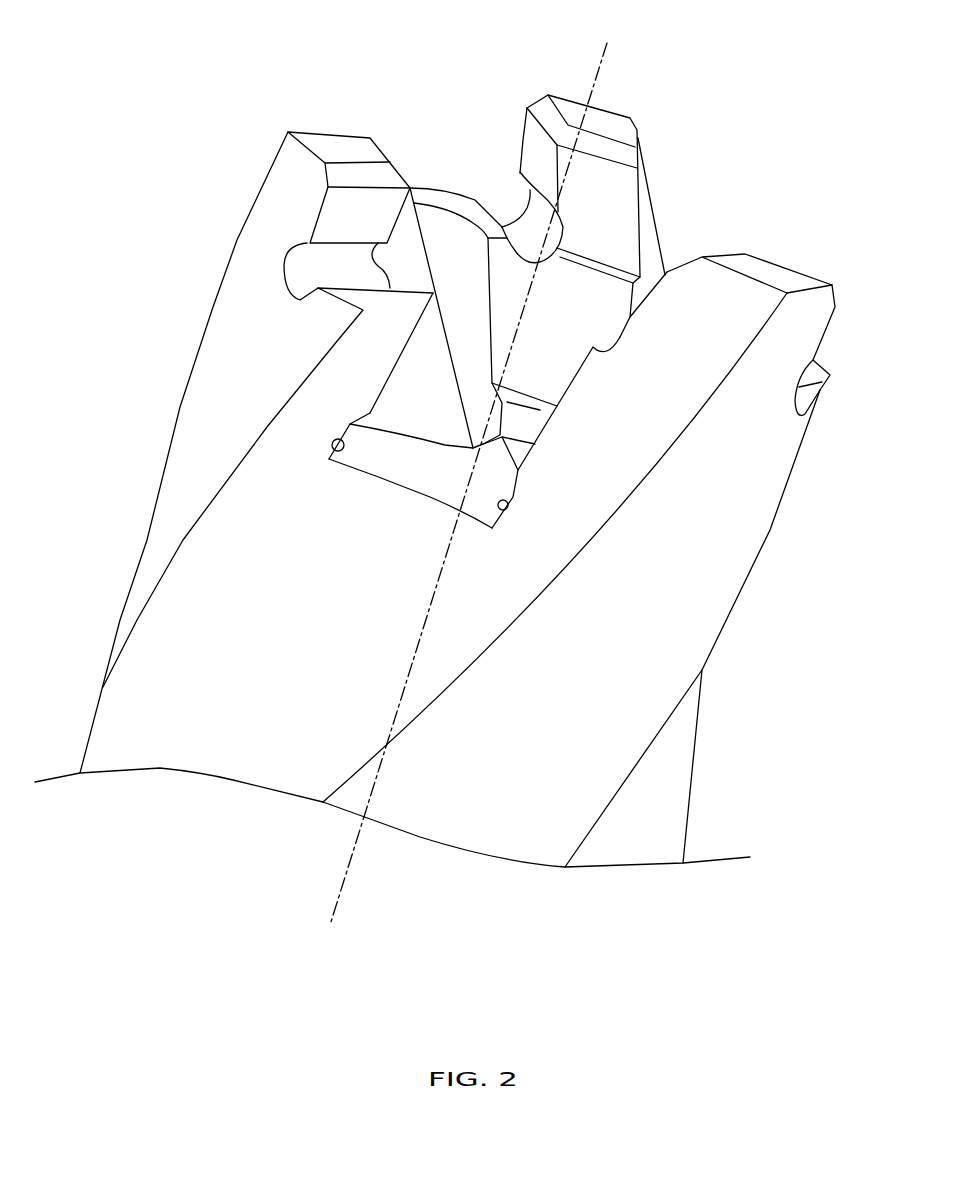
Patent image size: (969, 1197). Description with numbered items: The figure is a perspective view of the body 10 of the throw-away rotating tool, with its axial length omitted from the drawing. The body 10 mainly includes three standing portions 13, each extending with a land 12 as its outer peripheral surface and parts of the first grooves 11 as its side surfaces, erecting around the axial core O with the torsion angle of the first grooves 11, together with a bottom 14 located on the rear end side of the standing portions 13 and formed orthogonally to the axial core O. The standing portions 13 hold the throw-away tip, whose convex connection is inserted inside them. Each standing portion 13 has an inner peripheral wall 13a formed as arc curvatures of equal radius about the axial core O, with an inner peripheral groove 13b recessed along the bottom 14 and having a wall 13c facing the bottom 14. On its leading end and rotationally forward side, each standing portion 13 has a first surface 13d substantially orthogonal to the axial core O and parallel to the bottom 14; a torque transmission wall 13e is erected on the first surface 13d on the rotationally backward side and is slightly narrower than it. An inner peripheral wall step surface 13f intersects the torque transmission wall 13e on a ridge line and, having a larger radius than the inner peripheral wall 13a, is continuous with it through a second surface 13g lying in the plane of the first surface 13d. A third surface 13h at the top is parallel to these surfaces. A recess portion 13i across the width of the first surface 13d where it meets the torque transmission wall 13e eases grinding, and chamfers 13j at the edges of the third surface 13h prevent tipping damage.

The body 10 is at (162, 56).
The first grooves 11 is at (108, 733).
The land 12 is at (228, 326).
The standing portions 13 is at (285, 137).
The inner peripheral wall 13a is at (605, 302).
The inner peripheral groove 13b is at (328, 448).
The wall 13c is at (540, 410).
The first surface 13d is at (443, 200).
The torque transmission wall 13e is at (530, 143).
The inner peripheral wall step surface 13f is at (623, 192).
The second surface 13g is at (585, 260).
The third surface 13h is at (617, 118).
The recess portion 13i is at (517, 193).
The chamfers 13j is at (542, 115).
The bottom 14 is at (418, 463).
The axial core O is at (607, 43).